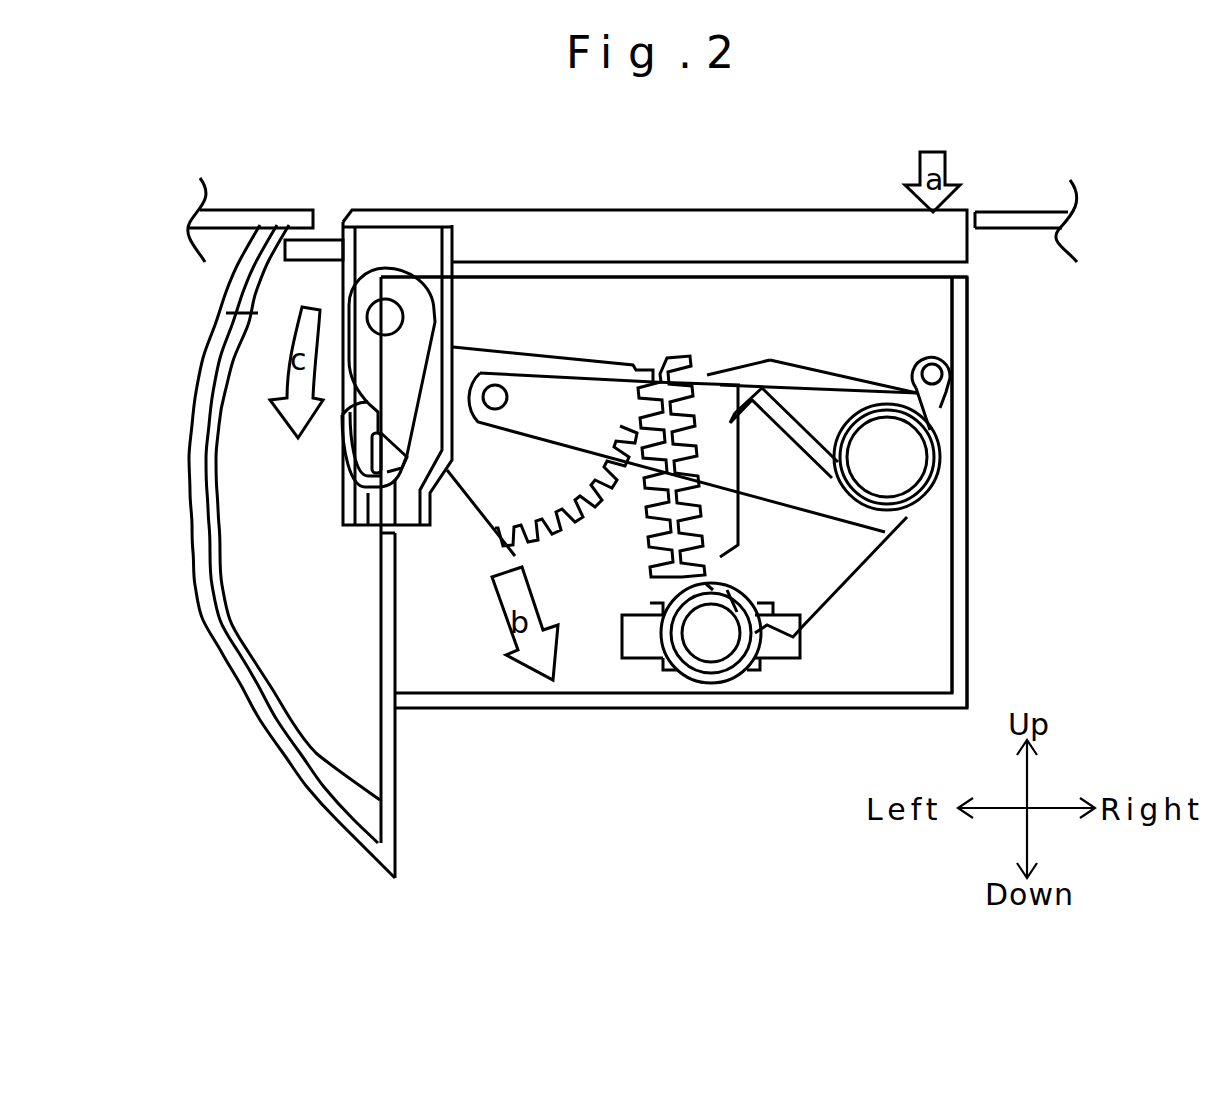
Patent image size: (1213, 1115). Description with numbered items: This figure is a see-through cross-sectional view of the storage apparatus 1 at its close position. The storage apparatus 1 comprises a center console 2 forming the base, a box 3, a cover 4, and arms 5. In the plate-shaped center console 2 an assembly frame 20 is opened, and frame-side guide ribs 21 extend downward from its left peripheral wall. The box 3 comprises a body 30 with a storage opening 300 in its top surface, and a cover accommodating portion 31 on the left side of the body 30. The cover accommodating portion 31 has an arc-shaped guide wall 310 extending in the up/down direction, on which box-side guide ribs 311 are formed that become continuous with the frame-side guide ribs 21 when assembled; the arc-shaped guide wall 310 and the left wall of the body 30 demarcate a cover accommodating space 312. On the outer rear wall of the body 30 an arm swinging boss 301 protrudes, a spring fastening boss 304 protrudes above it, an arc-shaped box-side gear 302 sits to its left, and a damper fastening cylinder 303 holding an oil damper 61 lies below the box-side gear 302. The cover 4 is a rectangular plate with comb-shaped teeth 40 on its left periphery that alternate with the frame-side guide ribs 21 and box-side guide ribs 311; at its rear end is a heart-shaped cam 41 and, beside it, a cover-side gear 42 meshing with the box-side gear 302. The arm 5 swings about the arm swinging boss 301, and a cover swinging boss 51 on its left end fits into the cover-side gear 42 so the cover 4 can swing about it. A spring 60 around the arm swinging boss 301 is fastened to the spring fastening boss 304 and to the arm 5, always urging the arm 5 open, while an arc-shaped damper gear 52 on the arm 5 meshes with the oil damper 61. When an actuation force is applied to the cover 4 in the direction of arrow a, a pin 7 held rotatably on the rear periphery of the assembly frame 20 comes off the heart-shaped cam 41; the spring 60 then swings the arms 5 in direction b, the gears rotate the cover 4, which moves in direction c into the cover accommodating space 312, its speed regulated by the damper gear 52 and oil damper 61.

The storage apparatus 1 is at (257, 551).
The center console 2 is at (993, 212).
The box 3 is at (967, 350).
The cover 4 is at (503, 208).
The arms 5 is at (682, 356).
The pin 7 is at (282, 437).
The assembly frame 20 is at (343, 222).
The frame-side guide ribs 21 is at (265, 290).
The body 30 is at (730, 432).
The cover accommodating portion 31 is at (265, 735).
The comb-shaped teeth 40 is at (285, 250).
The heart-shaped cam 41 is at (372, 445).
The cover-side gear 42 is at (585, 542).
The cover swinging boss 51 is at (497, 387).
The damper gear 52 is at (707, 694).
The spring 60 is at (904, 497).
The oil damper 61 is at (680, 672).
The storage opening 300 is at (782, 278).
The arm swinging boss 301 is at (930, 465).
The box-side gear 302 is at (657, 353).
The damper fastening cylinder 303 is at (712, 690).
The spring fastening boss 304 is at (945, 385).
The arc-shaped guide wall 310 is at (240, 650).
The box-side guide ribs 311 is at (228, 416).
The cover accommodating space 312 is at (342, 642).